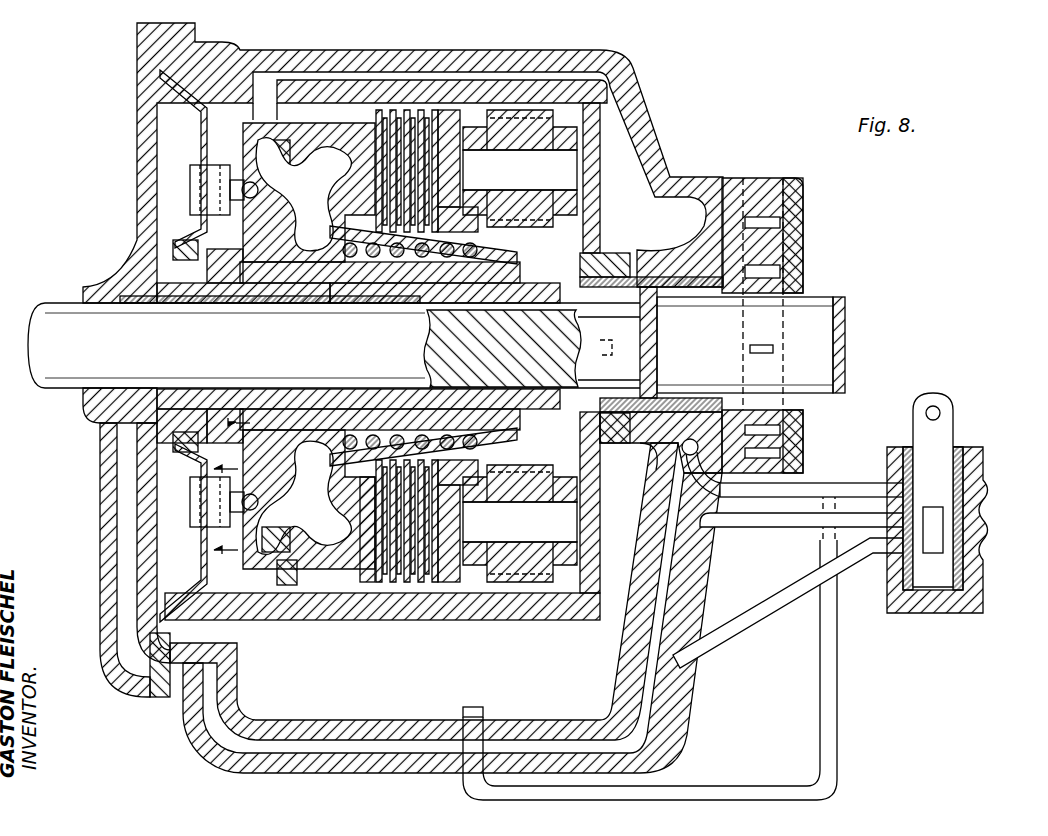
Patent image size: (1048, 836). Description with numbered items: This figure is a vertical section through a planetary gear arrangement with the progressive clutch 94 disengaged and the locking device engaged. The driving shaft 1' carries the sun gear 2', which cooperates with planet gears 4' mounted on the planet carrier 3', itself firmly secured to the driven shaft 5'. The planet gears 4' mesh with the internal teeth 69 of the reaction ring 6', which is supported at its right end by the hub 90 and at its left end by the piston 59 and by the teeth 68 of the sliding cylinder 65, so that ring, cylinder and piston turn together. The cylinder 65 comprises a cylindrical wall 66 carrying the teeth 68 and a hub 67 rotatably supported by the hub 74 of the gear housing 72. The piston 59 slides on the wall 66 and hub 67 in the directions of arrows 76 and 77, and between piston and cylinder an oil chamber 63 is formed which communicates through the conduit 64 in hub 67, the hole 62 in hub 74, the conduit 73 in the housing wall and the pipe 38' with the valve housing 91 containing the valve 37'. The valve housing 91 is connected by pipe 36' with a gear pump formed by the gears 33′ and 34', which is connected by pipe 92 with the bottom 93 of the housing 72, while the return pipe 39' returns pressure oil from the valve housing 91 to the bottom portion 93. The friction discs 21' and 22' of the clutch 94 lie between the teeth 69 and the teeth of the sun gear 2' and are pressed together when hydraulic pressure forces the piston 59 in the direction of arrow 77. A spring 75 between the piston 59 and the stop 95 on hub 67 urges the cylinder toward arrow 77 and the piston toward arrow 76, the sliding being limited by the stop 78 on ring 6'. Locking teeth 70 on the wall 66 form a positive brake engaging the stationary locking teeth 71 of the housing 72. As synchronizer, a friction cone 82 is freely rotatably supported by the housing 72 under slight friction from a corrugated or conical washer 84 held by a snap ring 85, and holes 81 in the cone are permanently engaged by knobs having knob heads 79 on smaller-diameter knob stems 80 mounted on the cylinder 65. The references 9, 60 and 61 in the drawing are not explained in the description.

The driving shaft 1' is at (328, 342).
The sun gear 2' is at (652, 460).
The planet carrier 3' is at (636, 463).
The planet gears 4' is at (520, 168).
The driven shaft 5' is at (765, 330).
The reaction ring 6' is at (579, 307).
The direction of fluid flow 9 is at (231, 500).
The friction disc 21' is at (398, 126).
The friction disc 22' is at (430, 126).
The gear pump gear 33′ is at (723, 397).
The gear pump gear 34' is at (791, 325).
The pipe 36' is at (792, 468).
The valve 37' is at (970, 490).
The pipe 38' is at (801, 538).
The return pipe 39' is at (788, 603).
The piston 59 is at (312, 478).
The packing ring 60 is at (263, 207).
The bushing 61 is at (137, 304).
The hole 62 is at (278, 403).
The oil chamber 63 is at (310, 292).
The conduit 64 is at (287, 460).
The sliding cylinder 65 is at (260, 227).
The cylindrical wall 66 is at (290, 583).
The hub 67 is at (343, 417).
The teeth 68 is at (333, 596).
The internal teeth 69 is at (370, 592).
The locking teeth 70 is at (283, 105).
The stationary locking teeth 71 is at (265, 115).
The gear housing 72 is at (100, 497).
The conduit 73 is at (123, 553).
The hub 74 is at (220, 292).
The spring 75 is at (383, 430).
The arrow 76 is at (347, 503).
The arrow 77 is at (222, 425).
The stop 78 is at (352, 592).
The knob heads 79 is at (193, 173).
The knob stems 80 is at (237, 183).
The holes 81 is at (197, 217).
The friction cone 82 is at (200, 118).
The corrugated or conical washer 84 is at (173, 247).
The snap ring 85 is at (205, 428).
The hub 90 is at (613, 255).
The valve housing 91 is at (970, 533).
The pipe 92 is at (838, 653).
The bottom of the housing 93 is at (330, 707).
The progressive clutch 94 is at (417, 590).
The stop 95 is at (522, 453).